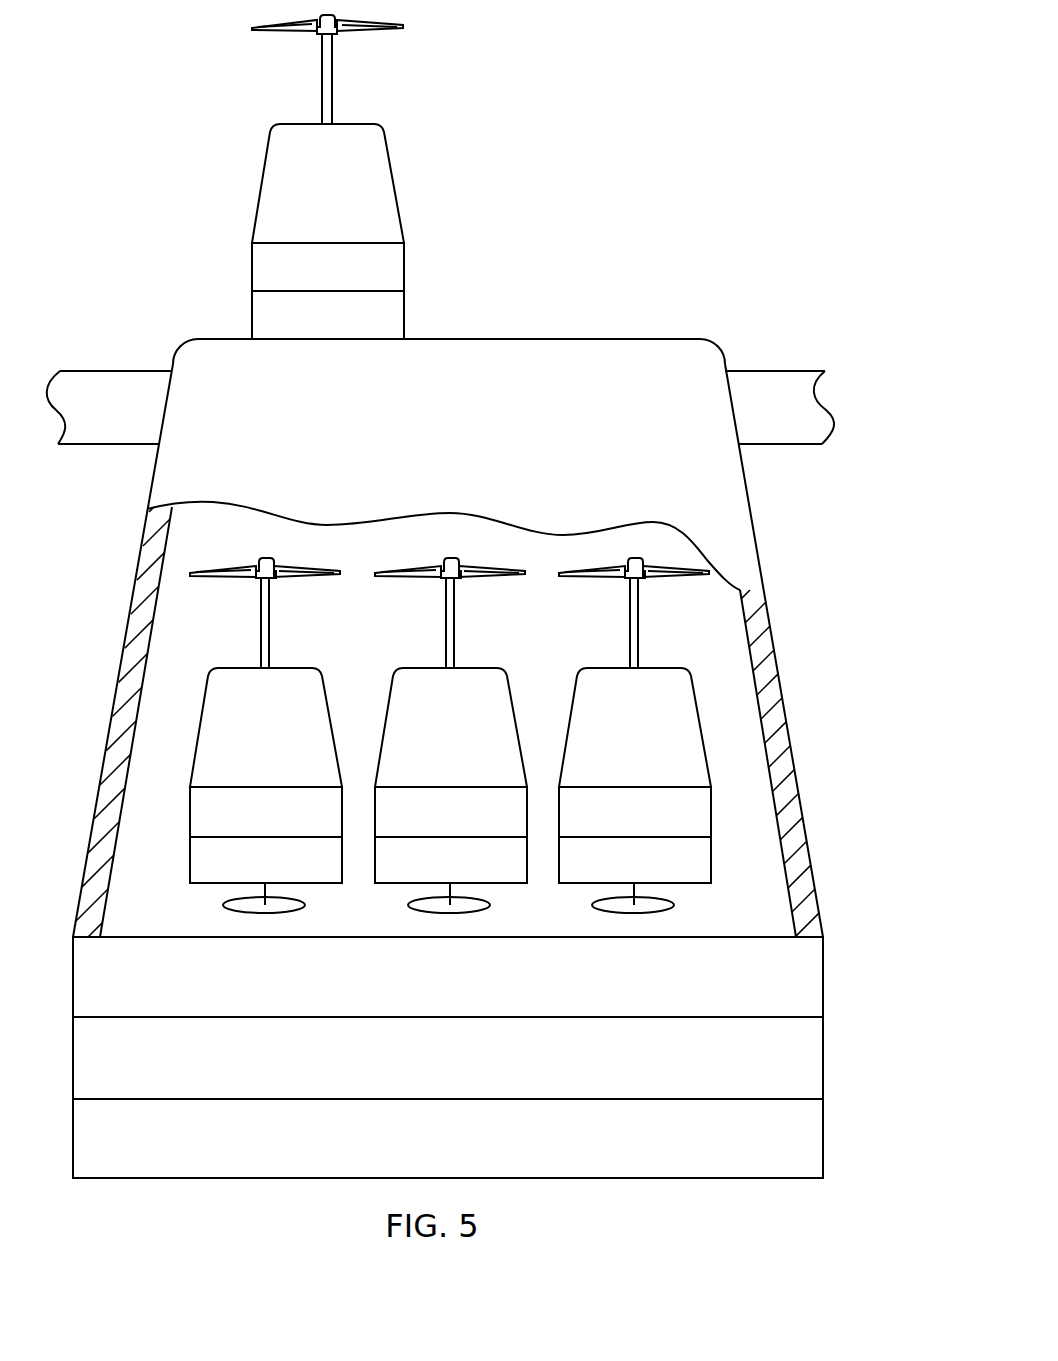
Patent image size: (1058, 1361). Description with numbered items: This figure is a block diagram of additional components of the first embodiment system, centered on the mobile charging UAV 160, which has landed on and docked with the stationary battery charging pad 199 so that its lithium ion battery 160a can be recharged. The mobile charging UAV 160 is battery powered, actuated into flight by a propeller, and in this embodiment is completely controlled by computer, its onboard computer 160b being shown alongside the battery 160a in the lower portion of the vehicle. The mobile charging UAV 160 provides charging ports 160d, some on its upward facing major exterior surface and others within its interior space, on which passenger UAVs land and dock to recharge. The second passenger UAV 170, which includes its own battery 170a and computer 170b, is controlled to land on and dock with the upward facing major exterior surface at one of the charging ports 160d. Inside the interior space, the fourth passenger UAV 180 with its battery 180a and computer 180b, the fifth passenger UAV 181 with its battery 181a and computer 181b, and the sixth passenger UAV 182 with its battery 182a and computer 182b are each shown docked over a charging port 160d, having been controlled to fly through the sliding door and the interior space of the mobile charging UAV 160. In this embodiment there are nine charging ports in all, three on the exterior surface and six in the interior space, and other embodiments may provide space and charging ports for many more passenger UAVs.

The mobile charging UAV 160 is at (499, 758).
The battery 160a is at (357, 1070).
The computer 160b is at (362, 988).
The charging ports 160d is at (300, 908).
The second passenger UAV 170 is at (316, 177).
The battery 170a is at (356, 329).
The computer 170b is at (356, 280).
The fourth passenger UAV 180 is at (255, 720).
The battery 180a is at (234, 873).
The computer 180b is at (234, 823).
The fifth passenger UAV 181 is at (439, 720).
The battery 181a is at (419, 873).
The computer 181b is at (419, 823).
The sixth passenger UAV 182 is at (622, 720).
The battery 182a is at (603, 873).
The computer 182b is at (603, 823).
The stationary battery charging pad 199 is at (598, 1153).